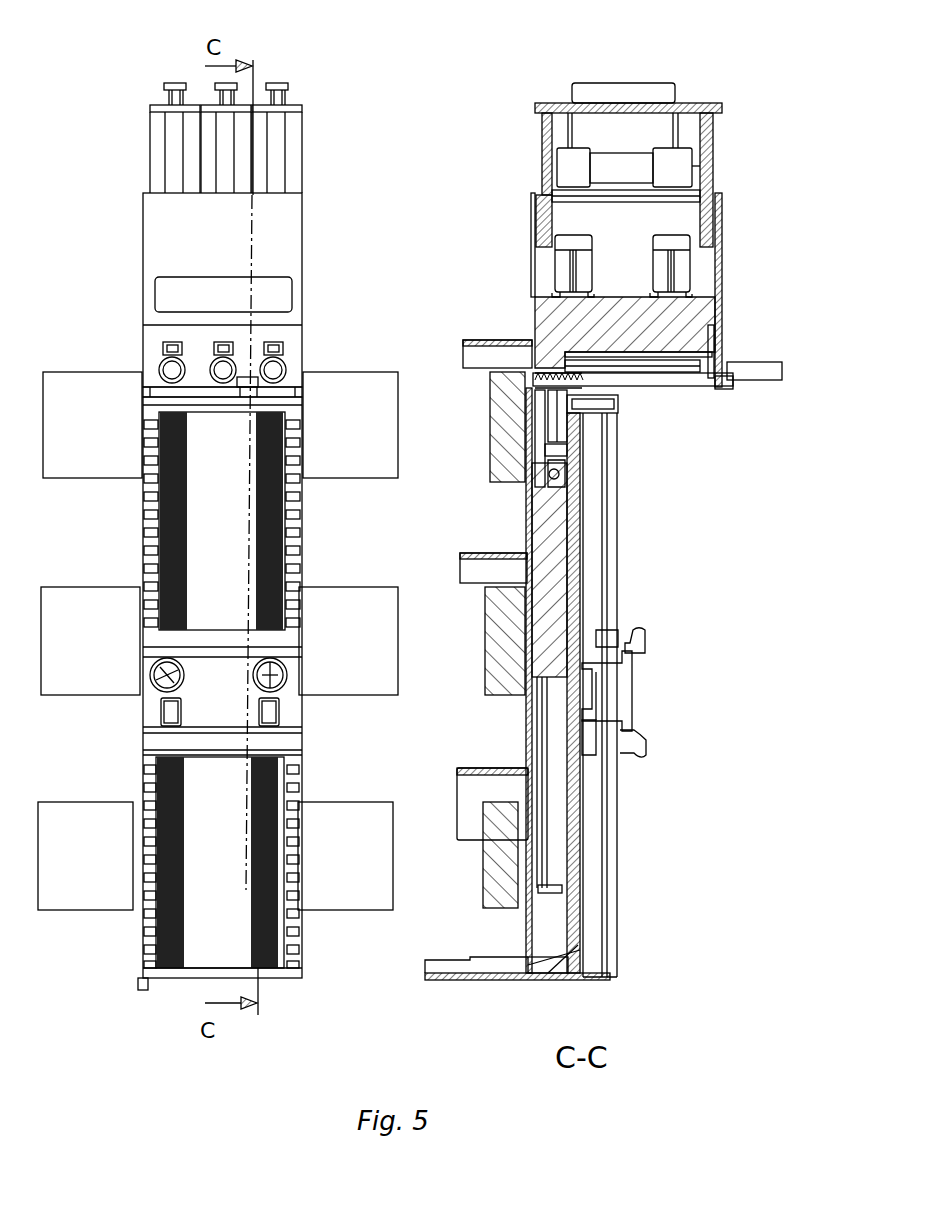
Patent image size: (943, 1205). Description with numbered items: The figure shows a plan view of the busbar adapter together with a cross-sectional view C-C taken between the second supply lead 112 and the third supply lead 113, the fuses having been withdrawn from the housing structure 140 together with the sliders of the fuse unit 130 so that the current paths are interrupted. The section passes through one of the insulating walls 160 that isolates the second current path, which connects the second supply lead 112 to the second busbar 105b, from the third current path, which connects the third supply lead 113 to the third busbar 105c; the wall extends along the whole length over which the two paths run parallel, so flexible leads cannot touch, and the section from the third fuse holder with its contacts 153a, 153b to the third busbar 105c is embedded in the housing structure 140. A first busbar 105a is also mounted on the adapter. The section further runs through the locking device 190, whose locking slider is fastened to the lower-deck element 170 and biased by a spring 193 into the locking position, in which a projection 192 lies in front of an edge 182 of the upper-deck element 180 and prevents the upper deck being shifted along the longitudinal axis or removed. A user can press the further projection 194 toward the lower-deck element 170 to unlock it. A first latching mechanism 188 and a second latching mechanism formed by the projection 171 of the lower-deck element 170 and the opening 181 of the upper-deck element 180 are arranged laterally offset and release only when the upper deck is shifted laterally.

The housing structure 140 is at (297, 238).
The second supply lead 112 is at (218, 370).
The third supply lead 113 is at (270, 372).
The first mounting bracket 105a is at (498, 416).
The second busbar 105b is at (340, 604).
The third busbar 105c is at (492, 868).
The fuse unit 130 is at (513, 147).
The contact of the third fuse holder 153a is at (564, 270).
The contact of the third fuse holder 153b is at (680, 270).
The insulating wall 160 is at (553, 318).
The further projection 194 is at (725, 380).
The projection of the locking slider 192 is at (617, 390).
The edge of the upper-deck element 182 is at (620, 400).
The spring 193 is at (580, 433).
The first latching mechanism 188 is at (577, 480).
The locking device 190 is at (712, 387).
The upper-deck element 180 is at (608, 887).
The lower-deck element 170 is at (522, 933).
The projection 171 is at (548, 983).
The depression or opening 181 is at (554, 961).